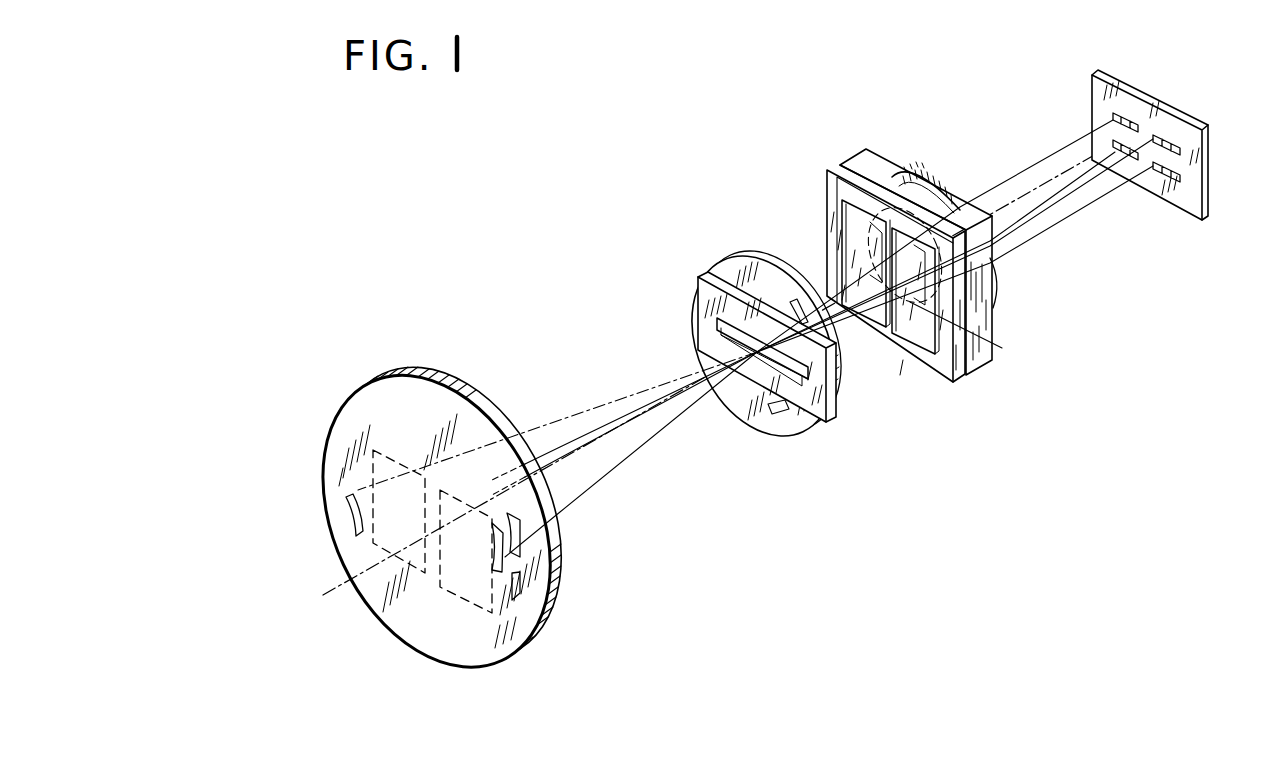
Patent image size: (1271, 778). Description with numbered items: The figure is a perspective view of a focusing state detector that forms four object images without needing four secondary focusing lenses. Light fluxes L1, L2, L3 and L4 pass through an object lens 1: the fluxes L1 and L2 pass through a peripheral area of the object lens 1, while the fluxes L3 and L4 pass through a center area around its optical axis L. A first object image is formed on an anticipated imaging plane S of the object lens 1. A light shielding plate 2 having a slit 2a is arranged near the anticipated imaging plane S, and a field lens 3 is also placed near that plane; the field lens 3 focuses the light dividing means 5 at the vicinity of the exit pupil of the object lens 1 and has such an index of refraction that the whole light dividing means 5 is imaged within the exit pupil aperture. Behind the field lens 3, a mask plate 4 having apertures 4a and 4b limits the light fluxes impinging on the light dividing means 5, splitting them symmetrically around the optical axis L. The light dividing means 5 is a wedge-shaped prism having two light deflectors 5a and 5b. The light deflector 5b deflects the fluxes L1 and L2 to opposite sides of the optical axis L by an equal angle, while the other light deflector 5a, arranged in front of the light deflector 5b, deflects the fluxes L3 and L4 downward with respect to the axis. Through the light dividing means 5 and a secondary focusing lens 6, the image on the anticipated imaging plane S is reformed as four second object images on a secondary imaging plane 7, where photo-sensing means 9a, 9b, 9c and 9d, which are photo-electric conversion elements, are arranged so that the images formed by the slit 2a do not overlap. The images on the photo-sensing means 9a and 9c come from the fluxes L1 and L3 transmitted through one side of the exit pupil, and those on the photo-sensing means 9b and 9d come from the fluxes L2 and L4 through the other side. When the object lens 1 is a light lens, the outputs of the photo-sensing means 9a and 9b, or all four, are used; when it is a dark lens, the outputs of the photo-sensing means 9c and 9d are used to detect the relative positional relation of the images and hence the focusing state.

The object lens 1 is at (355, 393).
The light shielding plate 2 is at (704, 300).
The slit 2a is at (802, 382).
The field lens 3 is at (733, 266).
The mask plate 4 is at (827, 200).
The aperture 4a is at (853, 250).
The aperture 4b is at (920, 337).
The light dividing means 5 is at (862, 163).
The light deflector 5a is at (972, 333).
The light deflector 5b is at (960, 280).
The secondary focusing lens 6 is at (924, 172).
The secondary imaging plane 7 is at (1100, 92).
The photo-sensing means 9a is at (1113, 118).
The photo-sensing means 9b is at (1183, 152).
The photo-sensing means 9c is at (1115, 145).
The photo-sensing means 9d is at (1183, 178).
The anticipated imaging plane S is at (722, 322).
The optical axis L is at (343, 587).
The light flux L1 is at (614, 511).
The light flux L2 is at (1040, 233).
The light flux L3 is at (650, 458).
The light flux L4 is at (1103, 200).